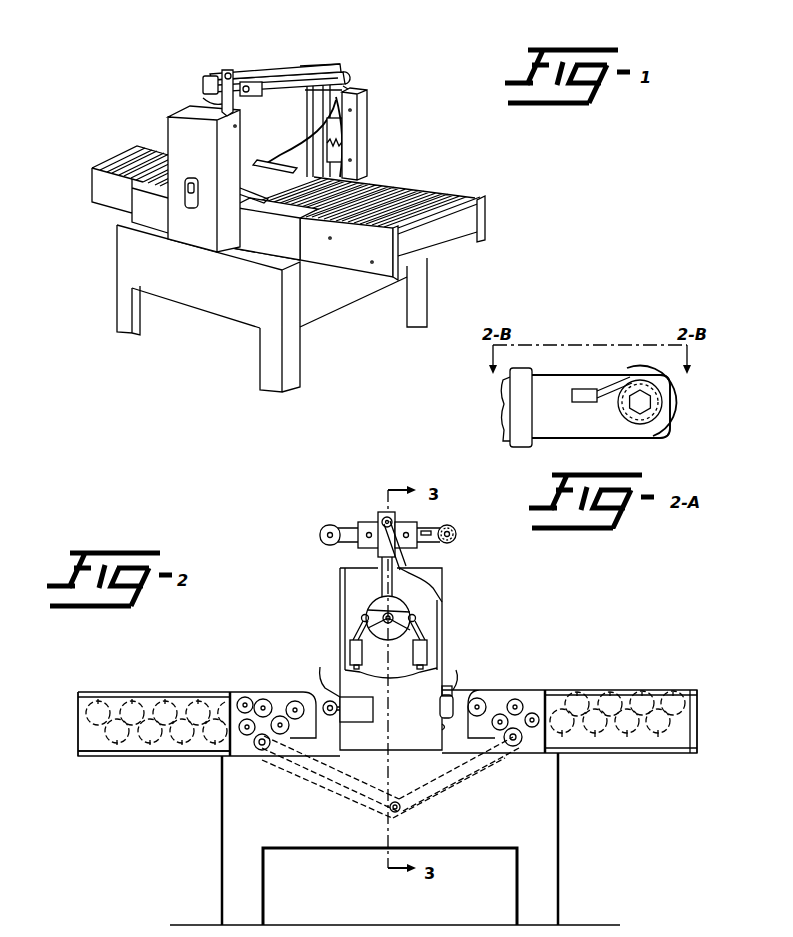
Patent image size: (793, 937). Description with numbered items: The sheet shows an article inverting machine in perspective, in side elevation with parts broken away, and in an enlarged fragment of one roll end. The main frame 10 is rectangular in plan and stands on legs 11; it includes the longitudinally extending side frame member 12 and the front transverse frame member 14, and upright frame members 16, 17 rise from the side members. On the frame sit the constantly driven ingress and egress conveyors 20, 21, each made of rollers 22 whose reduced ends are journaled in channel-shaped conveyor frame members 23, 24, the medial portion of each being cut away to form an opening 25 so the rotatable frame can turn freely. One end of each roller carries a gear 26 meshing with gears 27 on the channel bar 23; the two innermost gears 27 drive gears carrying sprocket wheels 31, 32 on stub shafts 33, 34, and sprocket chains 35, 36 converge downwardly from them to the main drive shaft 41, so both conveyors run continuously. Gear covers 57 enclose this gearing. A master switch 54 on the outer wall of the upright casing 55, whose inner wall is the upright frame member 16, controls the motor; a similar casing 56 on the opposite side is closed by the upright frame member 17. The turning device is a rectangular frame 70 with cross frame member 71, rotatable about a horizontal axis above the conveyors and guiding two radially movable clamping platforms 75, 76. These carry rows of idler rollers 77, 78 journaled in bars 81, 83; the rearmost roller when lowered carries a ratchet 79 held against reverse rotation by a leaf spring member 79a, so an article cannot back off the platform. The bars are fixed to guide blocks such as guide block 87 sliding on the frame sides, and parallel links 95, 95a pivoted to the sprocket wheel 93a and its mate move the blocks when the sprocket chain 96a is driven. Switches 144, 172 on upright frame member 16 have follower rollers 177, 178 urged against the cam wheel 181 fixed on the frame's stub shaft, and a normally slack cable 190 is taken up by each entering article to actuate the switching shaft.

In FIG. 1, the main frame 10 is at (267, 309).
In FIG. 2, the main frame 10 is at (395, 839).
In FIG. 1, the legs 11 is at (117, 318).
In FIG. 2, the legs 11 is at (222, 893).
In FIG. 1, the side frame member 12 is at (210, 303).
In FIG. 2, the side frame member 12 is at (308, 838).
In FIG. 1, the front transverse frame member 14 is at (338, 302).
In FIG. 2, the upright frame member 16 is at (350, 580).
In FIG. 1, the upright frame member 17 is at (362, 155).
In FIG. 1, the ingress conveyor 20 is at (151, 157).
In FIG. 2, the ingress conveyor 20 is at (172, 689).
In FIG. 1, the egress conveyor 21 is at (460, 195).
In FIG. 2, the egress conveyor 21 is at (655, 684).
In FIG. 1, the rollers 22 is at (143, 170).
In FIG. 1, the conveyor frame member 23 is at (330, 265).
In FIG. 2, the conveyor frame member 23 is at (100, 758).
In FIG. 1, the conveyor frame member 24 is at (481, 197).
In FIG. 2, the opening 25 is at (440, 727).
In FIG. 2, the gears 26 is at (132, 695).
In FIG. 2, the gears 27 is at (150, 755).
In FIG. 2, the sprocket wheel 31 is at (472, 778).
In FIG. 2, the sprocket wheel 32 is at (280, 752).
In FIG. 2, the stub shaft 33 is at (523, 752).
In FIG. 2, the stub shaft 34 is at (255, 753).
In FIG. 2, the endless sprocket chain 35 is at (468, 783).
In FIG. 2, the endless sprocket chain 36 is at (367, 785).
In FIG. 2, the main drive shaft 41 is at (398, 818).
In FIG. 1, the master switch 54 is at (188, 180).
In FIG. 1, the upright casing 55 is at (191, 167).
In FIG. 2, the upright casing 55 is at (435, 586).
In FIG. 1, the upright casing 56 is at (367, 105).
In FIG. 1, the gear covers 57 is at (123, 198).
In FIG. 2, the gear covers 57 is at (78, 742).
In FIG. 1, the rectangular frame 70 is at (267, 60).
In FIG. 2, the rectangular frame 70 is at (377, 512).
In FIG. 1, the cross frame member 71 is at (288, 66).
In FIG. 1, the clamping platform 75 is at (250, 189).
In FIG. 2, the clamping platform 75 is at (445, 688).
In FIG. 1, the clamping platform 76 is at (312, 72).
In FIG. 2-A, the clamping platform 76 is at (680, 383).
In FIG. 2, the clamping platform 76 is at (323, 519).
In FIG. 1, the idler rollers 77 is at (280, 204).
In FIG. 2, the idler rollers 77 is at (330, 690).
In FIG. 1, the idler rollers 78 is at (343, 72).
In FIG. 2-A, the idler rollers 78 is at (678, 402).
In FIG. 2, the idler rollers 78 is at (320, 535).
In FIG. 2-A, the ratchet 79 is at (625, 416).
In FIG. 2, the ratchet 79 is at (455, 528).
In FIG. 2-A, the leaf spring member 79a is at (608, 376).
In FIG. 2, the leaf spring member 79a is at (345, 723).
In FIG. 2, the bar 81 is at (440, 700).
In FIG. 1, the bar 83 is at (205, 80).
In FIG. 2-A, the bar 83 is at (503, 410).
In FIG. 2, the bar 83 is at (347, 528).
In FIG. 1, the guide block 87 is at (230, 70).
In FIG. 2-A, the guide block 87 is at (515, 448).
In FIG. 2, the guide block 87 is at (395, 518).
In FIG. 1, the sprocket wheel 93a is at (338, 128).
In FIG. 1, the parallel link 95 is at (203, 97).
In FIG. 2, the parallel link 95 is at (406, 557).
In FIG. 1, the parallel link 95a is at (348, 88).
In FIG. 1, the endless sprocket chain 96a is at (353, 143).
In FIG. 2, the switch 144 is at (427, 650).
In FIG. 2, the switch 172 is at (350, 653).
In FIG. 2, the follower roller 177 is at (416, 618).
In FIG. 2, the follower roller 178 is at (362, 618).
In FIG. 2, the cam wheel 181 is at (428, 598).
In FIG. 1, the cable 190 is at (290, 150).